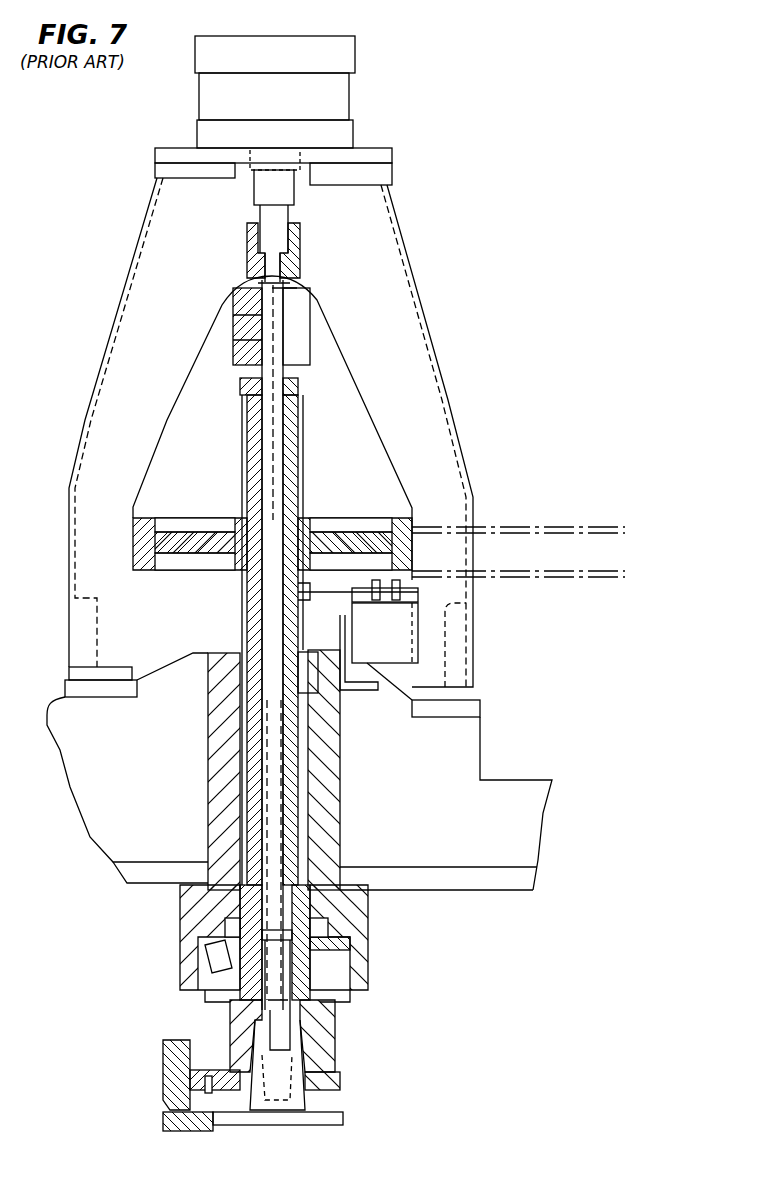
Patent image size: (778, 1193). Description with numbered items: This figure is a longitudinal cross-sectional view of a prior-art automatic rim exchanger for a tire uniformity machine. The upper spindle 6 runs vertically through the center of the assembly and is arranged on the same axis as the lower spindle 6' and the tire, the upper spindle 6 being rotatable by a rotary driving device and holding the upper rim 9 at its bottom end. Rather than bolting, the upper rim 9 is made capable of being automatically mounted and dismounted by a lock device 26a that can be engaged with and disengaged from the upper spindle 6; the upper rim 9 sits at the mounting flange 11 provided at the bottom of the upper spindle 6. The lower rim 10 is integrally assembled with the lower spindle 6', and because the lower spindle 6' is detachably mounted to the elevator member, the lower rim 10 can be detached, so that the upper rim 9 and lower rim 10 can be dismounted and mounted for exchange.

The lock device 26a is at (322, 277).
The upper spindle 6 is at (263, 1045).
The upper rim 9 is at (173, 1068).
The mounting flange 11 is at (173, 1080).
The lower rim 10 is at (178, 1115).
The lower spindle 6' is at (297, 1110).